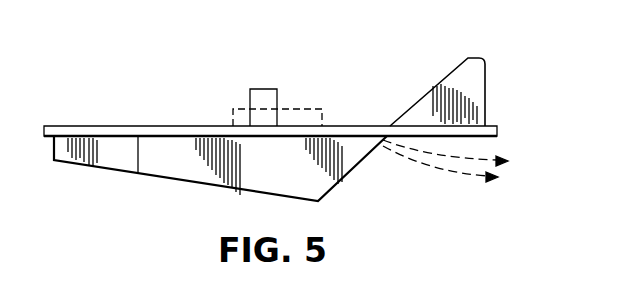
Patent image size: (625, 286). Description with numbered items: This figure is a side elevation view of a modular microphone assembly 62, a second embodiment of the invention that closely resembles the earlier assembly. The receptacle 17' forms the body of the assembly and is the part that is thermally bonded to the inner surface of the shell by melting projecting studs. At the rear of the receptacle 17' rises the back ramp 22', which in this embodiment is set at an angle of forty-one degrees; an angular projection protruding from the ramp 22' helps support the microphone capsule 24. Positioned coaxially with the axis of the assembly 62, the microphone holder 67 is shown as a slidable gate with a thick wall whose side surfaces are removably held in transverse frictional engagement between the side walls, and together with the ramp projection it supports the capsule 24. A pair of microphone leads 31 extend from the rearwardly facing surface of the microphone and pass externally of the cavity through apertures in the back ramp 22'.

The modular microphone assembly 62 is at (552, 83).
The receptacle 17' is at (225, 175).
The back ramp 22' is at (433, 92).
The microphone holder 67 is at (262, 95).
The directional microphone capsule 24 is at (233, 112).
The microphone leads 31 is at (440, 166).